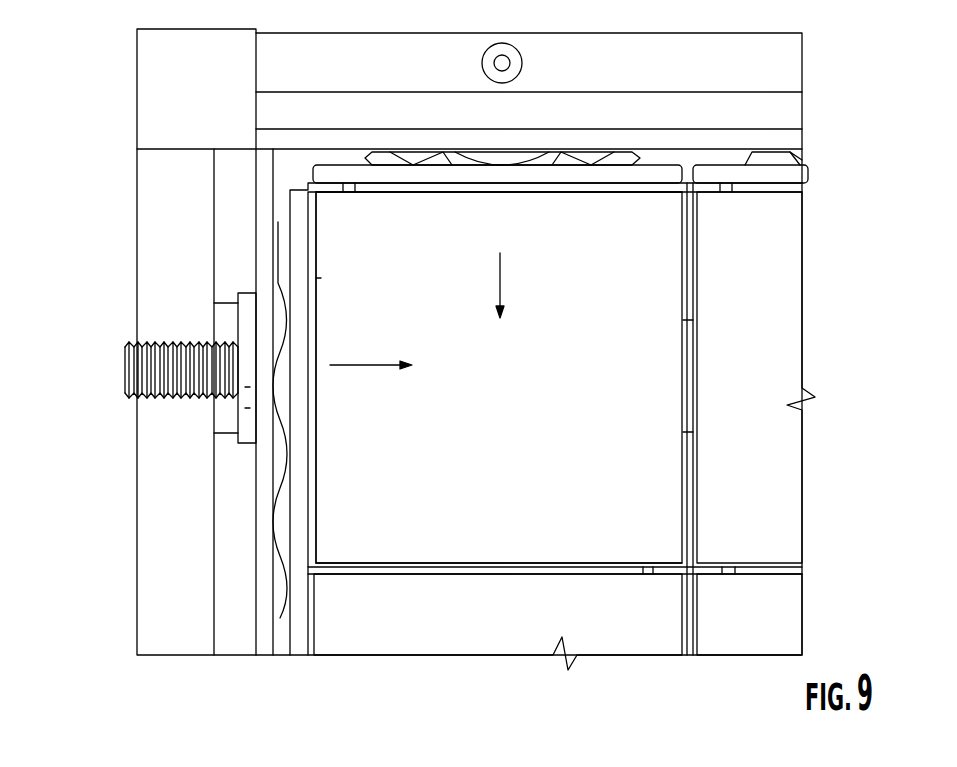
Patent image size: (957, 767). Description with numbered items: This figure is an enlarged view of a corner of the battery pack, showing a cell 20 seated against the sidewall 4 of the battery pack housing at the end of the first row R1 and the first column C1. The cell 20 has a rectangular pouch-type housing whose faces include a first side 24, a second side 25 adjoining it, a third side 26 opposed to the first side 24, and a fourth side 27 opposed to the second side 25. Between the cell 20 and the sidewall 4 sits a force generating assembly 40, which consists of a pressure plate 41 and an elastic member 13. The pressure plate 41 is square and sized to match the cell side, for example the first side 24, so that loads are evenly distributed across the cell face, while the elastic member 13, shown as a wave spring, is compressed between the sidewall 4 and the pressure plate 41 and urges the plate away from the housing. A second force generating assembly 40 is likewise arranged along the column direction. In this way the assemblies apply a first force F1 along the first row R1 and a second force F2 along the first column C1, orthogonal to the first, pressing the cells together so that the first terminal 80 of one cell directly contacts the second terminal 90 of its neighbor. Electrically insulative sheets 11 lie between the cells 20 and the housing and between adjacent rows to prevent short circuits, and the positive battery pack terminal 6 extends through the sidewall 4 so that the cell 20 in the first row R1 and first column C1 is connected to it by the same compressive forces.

The sidewall 4 is at (150, 570).
The positive battery pack terminal 6 is at (126, 385).
The electrically insulative sheet 11 is at (392, 577).
The elastic member 13 is at (387, 156).
The cell 20 is at (506, 367).
The first side 24 is at (322, 281).
The second side 25 is at (454, 562).
The third side 26 is at (682, 240).
The fourth side 27 is at (480, 197).
The force generating assembly 40 is at (425, 60).
The pressure plate 41 is at (345, 178).
The first terminal 80 is at (695, 353).
The second terminal 90 is at (682, 354).
The first column C1 is at (534, 63).
The first force F1 is at (371, 386).
The second force F2 is at (520, 289).
The first row R1 is at (183, 487).